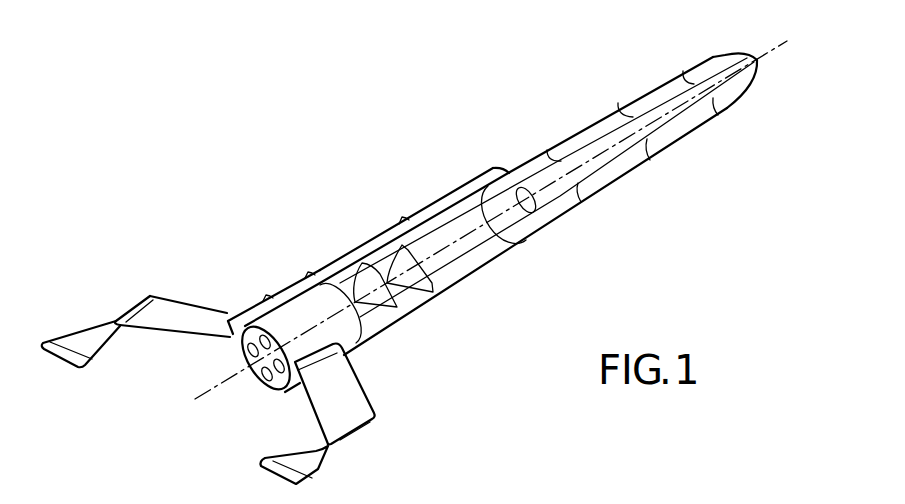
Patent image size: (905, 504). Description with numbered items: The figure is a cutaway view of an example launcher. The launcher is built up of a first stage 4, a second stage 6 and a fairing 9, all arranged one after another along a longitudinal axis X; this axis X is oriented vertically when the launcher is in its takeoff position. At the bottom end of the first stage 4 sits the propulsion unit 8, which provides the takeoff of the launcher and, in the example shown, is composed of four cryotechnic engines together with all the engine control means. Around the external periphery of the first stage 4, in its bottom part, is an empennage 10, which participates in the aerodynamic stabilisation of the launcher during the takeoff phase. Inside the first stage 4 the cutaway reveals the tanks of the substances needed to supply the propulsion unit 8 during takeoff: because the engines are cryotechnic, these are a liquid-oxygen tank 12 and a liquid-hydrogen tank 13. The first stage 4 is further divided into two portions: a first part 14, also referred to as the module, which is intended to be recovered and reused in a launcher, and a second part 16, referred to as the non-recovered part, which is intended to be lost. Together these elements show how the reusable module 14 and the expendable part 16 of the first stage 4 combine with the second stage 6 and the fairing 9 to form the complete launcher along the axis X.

The longitudinal axis X is at (778, 41).
The first stage 4 is at (341, 214).
The second stage 6 is at (557, 147).
The propulsion unit 8 is at (227, 335).
The fairing 9 is at (723, 112).
The empennage 10 is at (391, 400).
The liquid-oxygen tank 12 is at (391, 290).
The liquid-hydrogen tank 13 is at (487, 239).
The first part 14 is at (267, 298).
The second part 16 is at (403, 213).